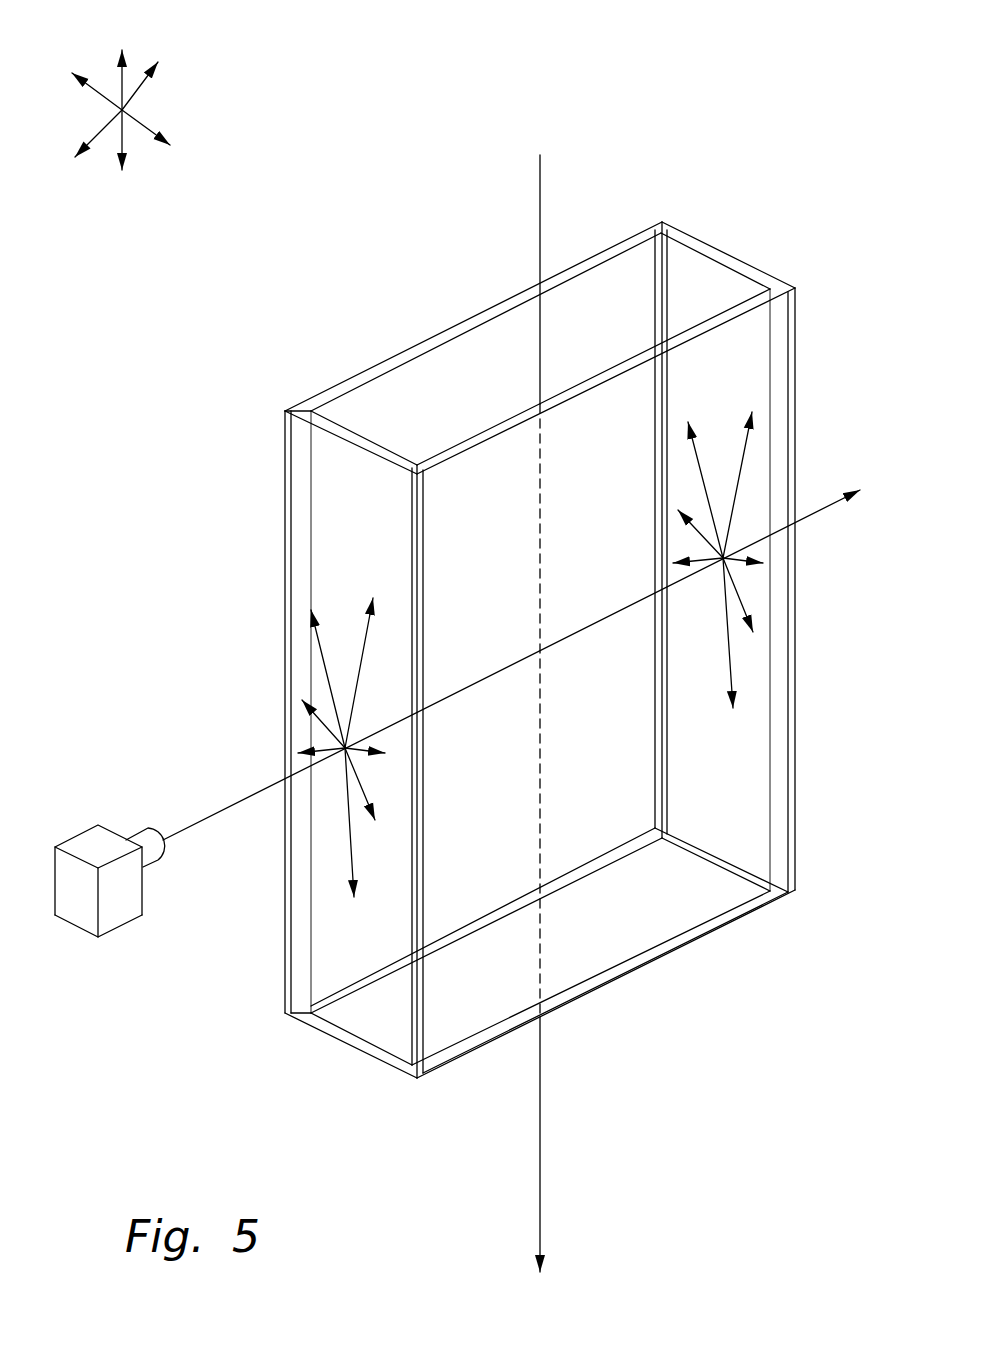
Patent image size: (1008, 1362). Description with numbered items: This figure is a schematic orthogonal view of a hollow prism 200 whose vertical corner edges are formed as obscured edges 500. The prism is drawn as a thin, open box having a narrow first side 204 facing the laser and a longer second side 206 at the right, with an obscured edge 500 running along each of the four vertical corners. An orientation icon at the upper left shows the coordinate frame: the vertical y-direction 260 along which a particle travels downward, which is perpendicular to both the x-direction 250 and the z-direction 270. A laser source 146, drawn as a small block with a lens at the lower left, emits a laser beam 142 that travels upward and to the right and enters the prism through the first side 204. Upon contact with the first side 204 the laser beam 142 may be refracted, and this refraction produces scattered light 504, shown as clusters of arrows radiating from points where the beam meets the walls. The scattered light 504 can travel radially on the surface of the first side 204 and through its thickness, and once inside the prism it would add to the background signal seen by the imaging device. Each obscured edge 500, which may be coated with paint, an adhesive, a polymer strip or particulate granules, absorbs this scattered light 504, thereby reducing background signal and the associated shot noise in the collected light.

The laser beam 142 is at (240, 801).
The laser source 146 is at (120, 930).
The sample container 200 is at (305, 326).
The first side 204 is at (330, 945).
The second side 206 is at (750, 765).
The x-direction 250 is at (146, 123).
The y-direction 260 is at (121, 95).
The z-direction 270 is at (138, 96).
The obscured edge 500 is at (668, 290).
The scattered light 504 is at (268, 718).